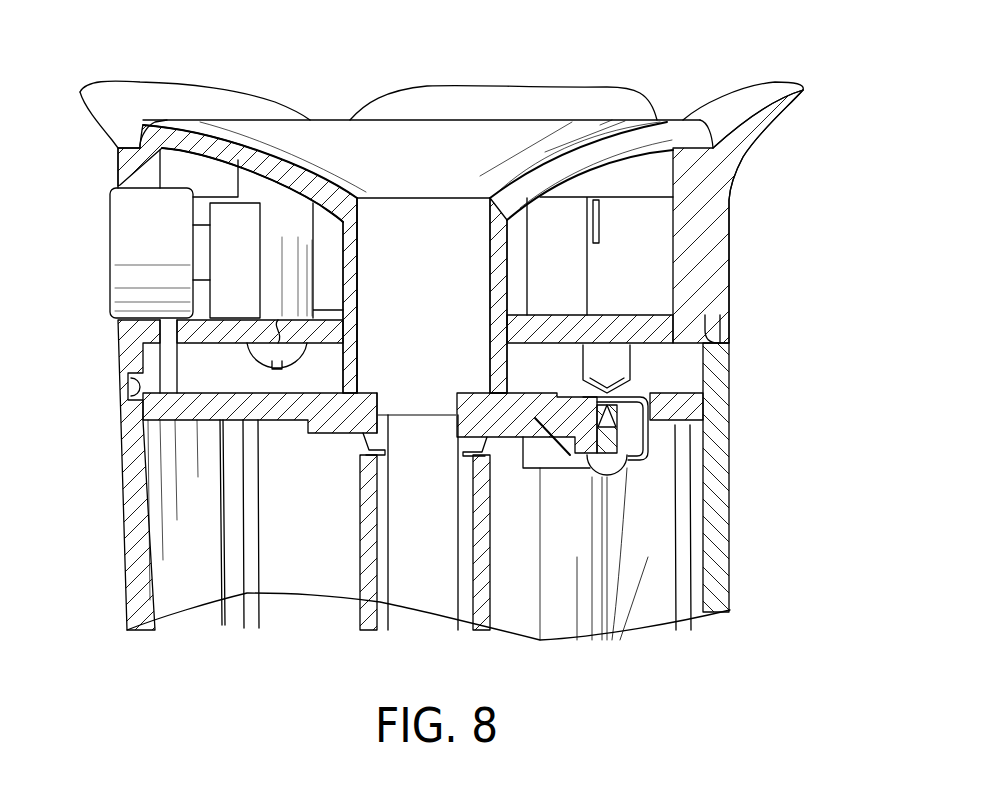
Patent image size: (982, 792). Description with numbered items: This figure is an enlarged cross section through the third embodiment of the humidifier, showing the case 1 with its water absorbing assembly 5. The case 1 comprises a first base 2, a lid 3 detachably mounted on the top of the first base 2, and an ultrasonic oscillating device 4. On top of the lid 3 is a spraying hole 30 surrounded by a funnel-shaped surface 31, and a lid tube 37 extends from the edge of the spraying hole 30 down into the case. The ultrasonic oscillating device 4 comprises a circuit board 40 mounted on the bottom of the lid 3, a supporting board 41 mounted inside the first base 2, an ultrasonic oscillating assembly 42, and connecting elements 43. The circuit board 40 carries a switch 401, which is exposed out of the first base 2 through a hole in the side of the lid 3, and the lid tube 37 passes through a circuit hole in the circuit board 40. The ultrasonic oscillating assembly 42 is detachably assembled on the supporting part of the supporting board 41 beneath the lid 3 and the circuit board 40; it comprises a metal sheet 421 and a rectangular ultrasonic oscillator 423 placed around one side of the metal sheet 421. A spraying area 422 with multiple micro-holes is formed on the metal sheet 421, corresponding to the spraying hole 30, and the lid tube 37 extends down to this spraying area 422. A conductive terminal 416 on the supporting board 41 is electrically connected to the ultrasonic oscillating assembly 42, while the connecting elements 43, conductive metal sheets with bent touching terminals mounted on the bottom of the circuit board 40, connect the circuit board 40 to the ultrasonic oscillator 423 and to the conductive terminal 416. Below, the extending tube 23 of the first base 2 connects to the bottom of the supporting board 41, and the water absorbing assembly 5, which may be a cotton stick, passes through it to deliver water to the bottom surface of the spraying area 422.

The case 1 is at (752, 346).
The first base 2 is at (734, 488).
The lid 3 is at (612, 104).
The ultrasonic oscillating device 4 is at (636, 291).
The water absorbing assembly 5 is at (418, 577).
The extending tube 23 is at (483, 521).
The spraying hole 30 is at (455, 218).
The funnel-shaped surface 31 is at (538, 163).
The lid tube 37 is at (347, 263).
The circuit board 40 is at (640, 330).
The supporting board 41 is at (690, 406).
The ultrasonic oscillating assembly 42 is at (478, 377).
The connecting element 43 is at (617, 372).
The switch 401 is at (138, 243).
The conductive terminal 416 is at (648, 443).
The metal sheet 421 is at (392, 405).
The spraying area 422 is at (406, 413).
The ultrasonic oscillator 423 is at (497, 393).